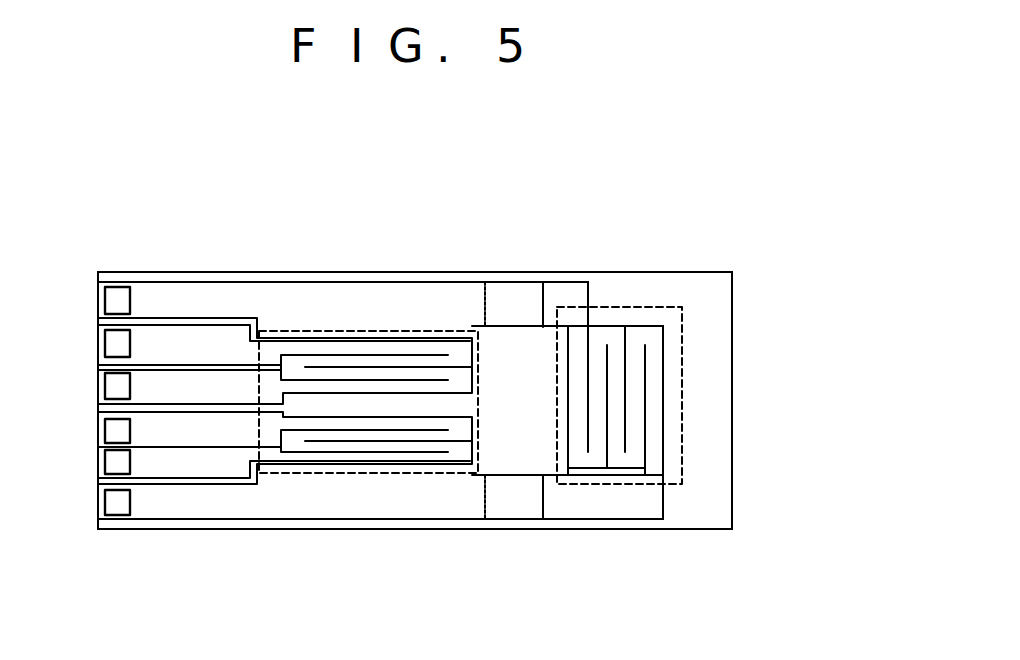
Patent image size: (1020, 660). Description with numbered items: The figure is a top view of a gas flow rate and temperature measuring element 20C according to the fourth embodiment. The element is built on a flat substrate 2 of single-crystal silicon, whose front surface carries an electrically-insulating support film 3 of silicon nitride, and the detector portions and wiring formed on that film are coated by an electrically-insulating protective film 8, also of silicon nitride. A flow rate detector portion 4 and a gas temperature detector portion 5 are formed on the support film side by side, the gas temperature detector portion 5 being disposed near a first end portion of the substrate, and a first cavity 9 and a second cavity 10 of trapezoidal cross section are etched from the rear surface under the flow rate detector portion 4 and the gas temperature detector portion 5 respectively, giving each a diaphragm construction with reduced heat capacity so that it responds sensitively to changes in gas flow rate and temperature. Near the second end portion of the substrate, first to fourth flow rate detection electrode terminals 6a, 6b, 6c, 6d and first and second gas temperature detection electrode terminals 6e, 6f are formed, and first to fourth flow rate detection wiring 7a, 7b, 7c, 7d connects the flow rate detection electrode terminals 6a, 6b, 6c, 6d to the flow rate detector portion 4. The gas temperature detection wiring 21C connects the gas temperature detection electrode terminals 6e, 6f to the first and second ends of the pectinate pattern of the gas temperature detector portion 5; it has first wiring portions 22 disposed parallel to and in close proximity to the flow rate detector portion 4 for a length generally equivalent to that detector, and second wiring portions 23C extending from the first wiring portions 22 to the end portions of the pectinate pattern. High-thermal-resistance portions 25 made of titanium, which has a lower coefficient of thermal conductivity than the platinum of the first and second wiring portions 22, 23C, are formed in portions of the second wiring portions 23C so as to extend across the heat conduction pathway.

The gas flow rate and temperature measuring element 20C is at (128, 186).
The flat substrate 2 is at (727, 294).
The electrically-insulating support film 3 is at (415, 400).
The electrically-insulating protective film 8 is at (415, 400).
The gas temperature detection wiring 21C is at (291, 292).
The first wiring portions 22 is at (418, 292).
The first flow rate detection electrode terminal 6a is at (108, 344).
The second flow rate detection electrode terminal 6b is at (108, 382).
The third flow rate detection electrode terminal 6c is at (108, 427).
The fourth flow rate detection electrode terminal 6d is at (108, 462).
The first gas temperature detection electrode terminal 6e is at (108, 302).
The second gas temperature detection electrode terminal 6f is at (108, 500).
The first flow rate detection wiring 7a is at (203, 333).
The second flow rate detection wiring 7b is at (168, 377).
The third flow rate detection wiring 7c is at (162, 447).
The fourth flow rate detection wiring 7d is at (205, 472).
The flow rate detector portion 4 is at (367, 350).
The first cavity 9 is at (465, 330).
The high-thermal-resistance portions 25 is at (513, 287).
The second wiring portions 23C is at (568, 287).
The gas temperature detector portion 5 is at (636, 330).
The second cavity 10 is at (682, 307).